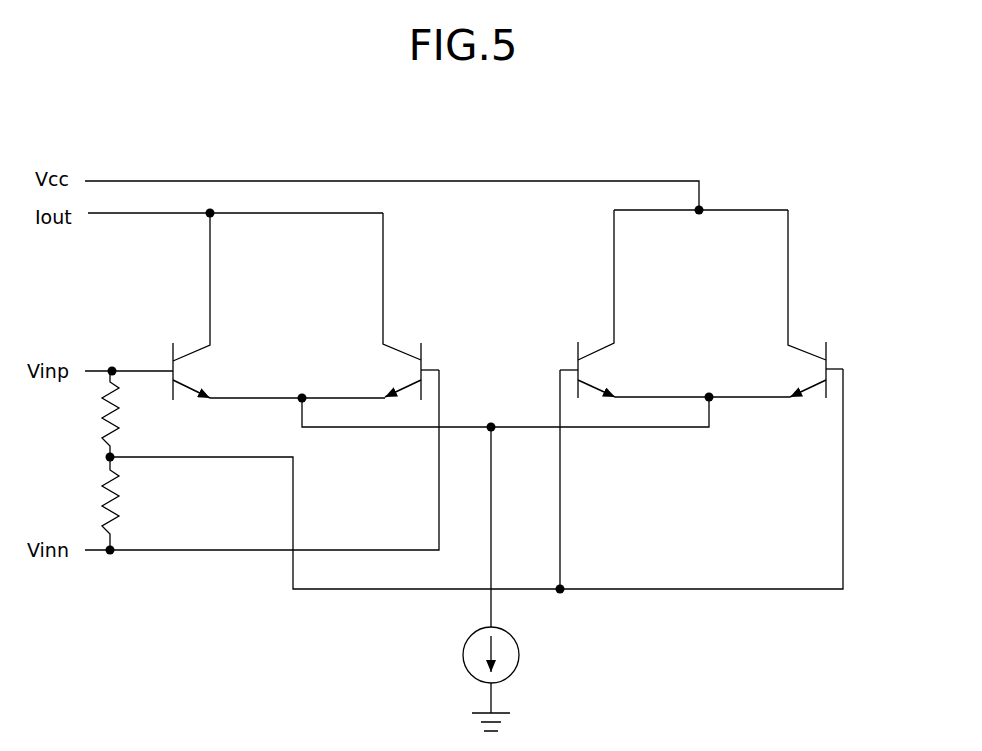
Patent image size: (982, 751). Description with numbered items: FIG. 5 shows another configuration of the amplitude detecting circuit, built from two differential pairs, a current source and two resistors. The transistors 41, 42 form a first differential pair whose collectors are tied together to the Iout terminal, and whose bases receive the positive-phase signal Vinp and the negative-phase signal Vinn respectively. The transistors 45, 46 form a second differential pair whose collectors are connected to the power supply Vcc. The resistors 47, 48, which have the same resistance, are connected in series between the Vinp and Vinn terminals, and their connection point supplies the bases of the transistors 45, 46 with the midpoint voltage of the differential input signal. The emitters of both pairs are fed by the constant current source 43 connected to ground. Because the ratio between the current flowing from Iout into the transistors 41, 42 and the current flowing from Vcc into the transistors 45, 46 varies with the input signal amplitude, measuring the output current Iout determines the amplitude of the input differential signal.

The transistor 41 is at (172, 353).
The transistor 42 is at (422, 353).
The constant current source 43 is at (528, 657).
The transistor 45 is at (577, 353).
The transistor 46 is at (827, 353).
The resistor 47 is at (122, 418).
The resistor 48 is at (122, 515).